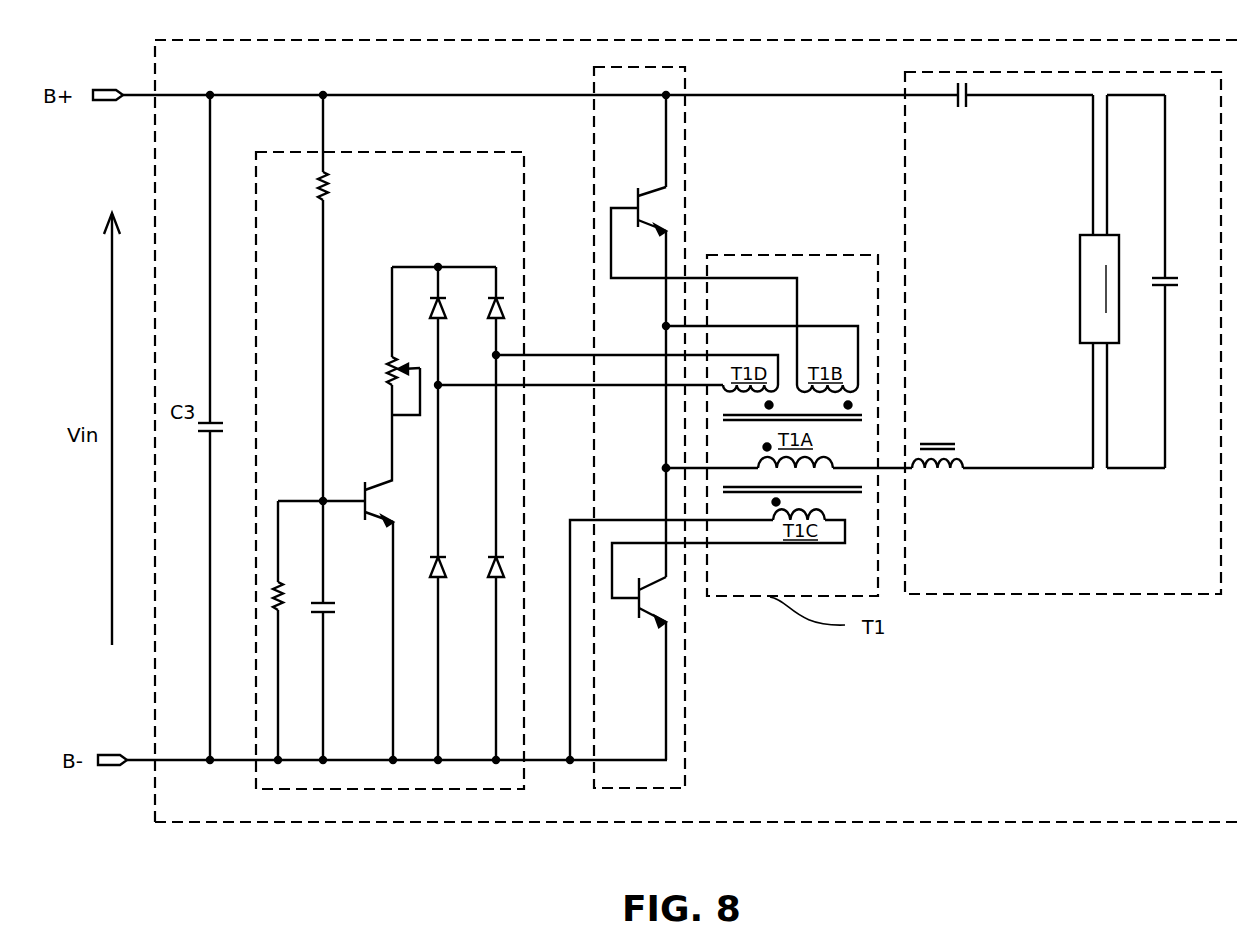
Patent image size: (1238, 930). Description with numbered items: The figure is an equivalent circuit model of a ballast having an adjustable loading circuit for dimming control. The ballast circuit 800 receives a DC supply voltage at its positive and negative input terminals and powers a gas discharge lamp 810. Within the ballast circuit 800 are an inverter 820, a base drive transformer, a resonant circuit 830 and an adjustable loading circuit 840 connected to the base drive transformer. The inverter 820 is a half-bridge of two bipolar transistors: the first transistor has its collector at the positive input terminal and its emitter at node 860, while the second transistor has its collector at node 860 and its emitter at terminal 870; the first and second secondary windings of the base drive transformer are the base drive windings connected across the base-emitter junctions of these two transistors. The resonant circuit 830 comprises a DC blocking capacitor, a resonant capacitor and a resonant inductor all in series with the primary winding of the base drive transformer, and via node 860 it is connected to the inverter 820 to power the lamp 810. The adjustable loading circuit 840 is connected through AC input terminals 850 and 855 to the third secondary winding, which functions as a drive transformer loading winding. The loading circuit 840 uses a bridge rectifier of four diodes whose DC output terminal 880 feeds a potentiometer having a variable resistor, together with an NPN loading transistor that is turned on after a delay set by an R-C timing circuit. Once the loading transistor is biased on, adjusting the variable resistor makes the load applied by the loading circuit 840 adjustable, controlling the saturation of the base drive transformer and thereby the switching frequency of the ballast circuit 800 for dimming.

The ballast circuit 800 is at (810, 822).
The gas discharge lamp 810 is at (1077, 277).
The inverter 820 is at (687, 720).
The resonant circuit 830 is at (1032, 595).
The adjustable loading circuit 840 is at (410, 790).
The AC input terminal 850 is at (538, 352).
The AC input terminal 855 is at (537, 388).
The node 860 is at (667, 497).
The terminal 870 is at (355, 757).
The DC output terminal 880 is at (412, 265).